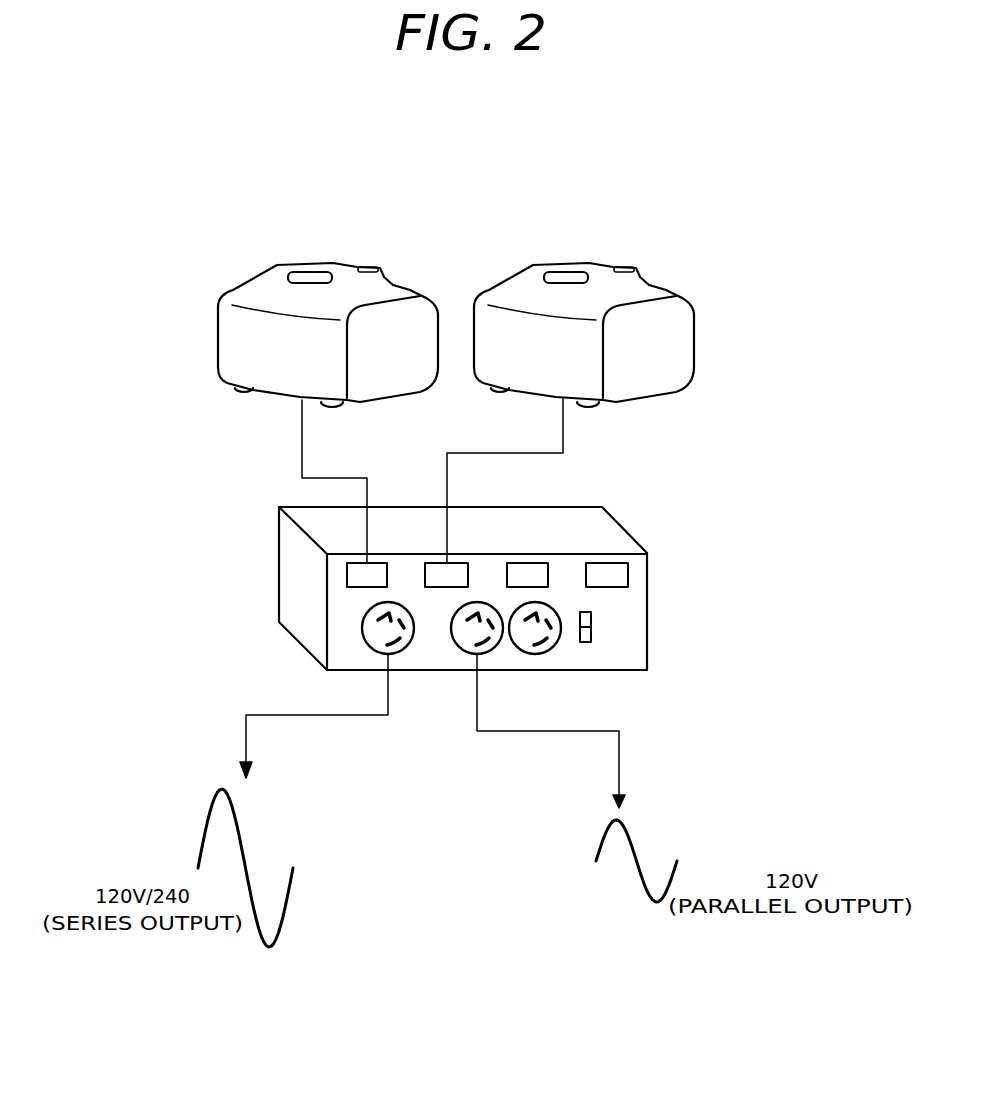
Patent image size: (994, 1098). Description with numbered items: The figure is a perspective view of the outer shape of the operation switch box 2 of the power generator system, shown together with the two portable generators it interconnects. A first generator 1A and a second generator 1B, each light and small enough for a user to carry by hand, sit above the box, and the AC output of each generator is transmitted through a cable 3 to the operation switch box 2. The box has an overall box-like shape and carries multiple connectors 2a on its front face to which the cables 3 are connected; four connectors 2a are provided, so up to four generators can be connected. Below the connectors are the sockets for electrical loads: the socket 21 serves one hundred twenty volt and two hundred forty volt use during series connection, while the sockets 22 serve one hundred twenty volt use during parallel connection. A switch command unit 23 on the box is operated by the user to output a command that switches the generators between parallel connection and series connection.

The first generator 1A is at (320, 262).
The second generator 1B is at (576, 262).
The operation switch box 2 is at (645, 508).
The connectors 2a is at (517, 563).
The cable 3 is at (342, 478).
The socket 21 is at (405, 655).
The sockets 22 is at (540, 655).
The switch command unit 23 is at (593, 632).